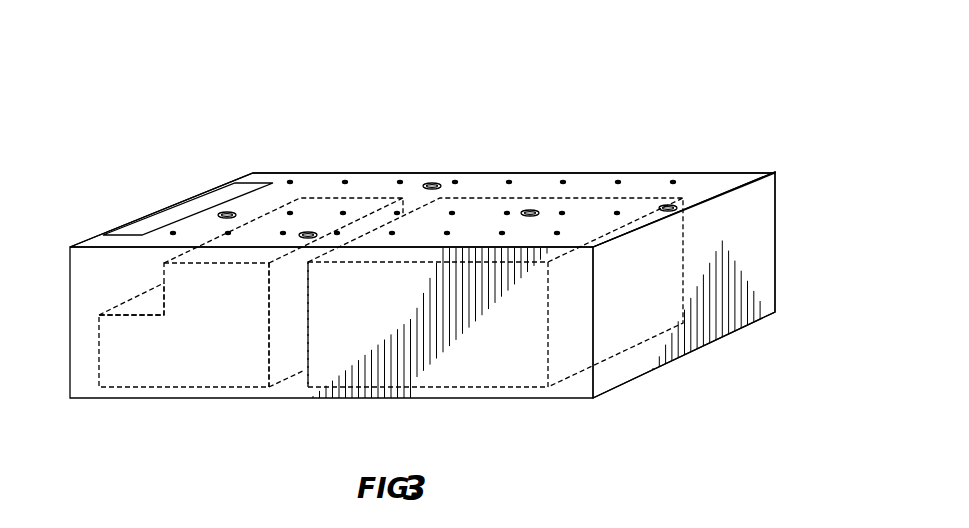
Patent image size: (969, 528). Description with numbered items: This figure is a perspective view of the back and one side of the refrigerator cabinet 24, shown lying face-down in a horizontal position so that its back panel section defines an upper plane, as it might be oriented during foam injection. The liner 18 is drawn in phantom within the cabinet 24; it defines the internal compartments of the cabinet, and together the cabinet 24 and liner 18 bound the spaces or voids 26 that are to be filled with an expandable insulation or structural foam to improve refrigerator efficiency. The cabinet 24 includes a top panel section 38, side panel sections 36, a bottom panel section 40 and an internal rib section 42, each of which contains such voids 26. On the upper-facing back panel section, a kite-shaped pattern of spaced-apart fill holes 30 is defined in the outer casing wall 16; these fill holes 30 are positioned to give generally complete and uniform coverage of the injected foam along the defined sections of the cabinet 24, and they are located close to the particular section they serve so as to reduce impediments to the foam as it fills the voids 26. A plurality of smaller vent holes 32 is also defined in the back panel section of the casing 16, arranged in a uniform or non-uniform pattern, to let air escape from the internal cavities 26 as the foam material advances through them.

The outer casing wall 16 is at (775, 202).
The liner 18 is at (300, 198).
The cabinet 24 is at (513, 90).
The voids 26 is at (655, 200).
The fill holes 30 is at (437, 182).
The vent holes 32 is at (563, 182).
The side panel sections 36 is at (177, 366).
The top panel section 38 is at (750, 262).
The bottom panel section 40 is at (160, 207).
The internal rib section 42 is at (295, 357).